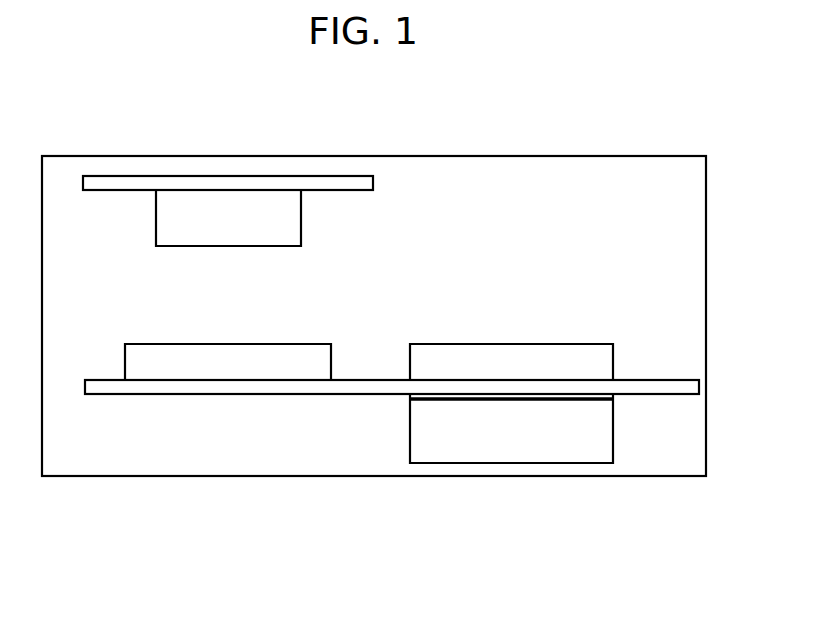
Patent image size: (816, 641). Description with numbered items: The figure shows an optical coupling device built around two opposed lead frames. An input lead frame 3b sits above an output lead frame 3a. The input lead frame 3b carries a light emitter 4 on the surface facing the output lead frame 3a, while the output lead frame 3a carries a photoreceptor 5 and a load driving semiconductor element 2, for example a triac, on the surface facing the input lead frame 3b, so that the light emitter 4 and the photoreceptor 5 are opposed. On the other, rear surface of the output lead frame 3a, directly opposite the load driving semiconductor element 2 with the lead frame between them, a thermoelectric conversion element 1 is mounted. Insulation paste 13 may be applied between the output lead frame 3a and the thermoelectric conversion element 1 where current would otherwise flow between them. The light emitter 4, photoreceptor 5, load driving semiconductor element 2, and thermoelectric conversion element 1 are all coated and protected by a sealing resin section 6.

The thermoelectric conversion element 1 is at (553, 433).
The load driving semiconductor element 2 is at (436, 360).
The output lead frame 3a is at (260, 388).
The input lead frame 3b is at (280, 190).
The light emitter 4 is at (195, 197).
The photoreceptor 5 is at (183, 370).
The sealing resin section 6 is at (566, 190).
The insulation paste 13 is at (505, 397).